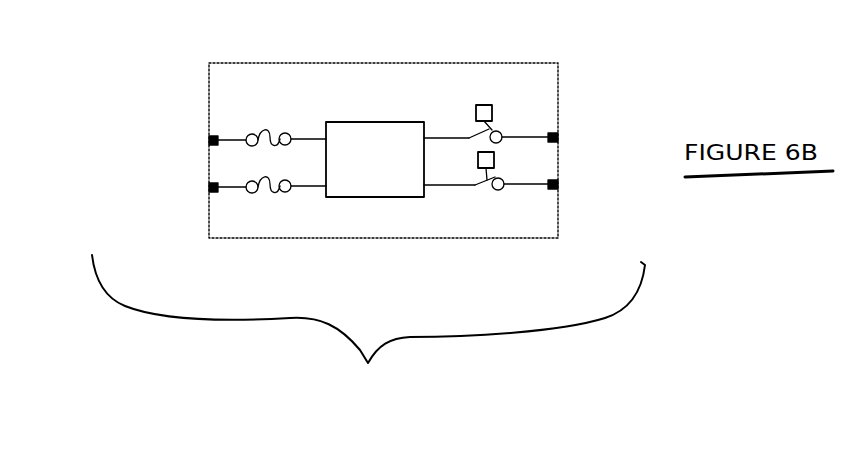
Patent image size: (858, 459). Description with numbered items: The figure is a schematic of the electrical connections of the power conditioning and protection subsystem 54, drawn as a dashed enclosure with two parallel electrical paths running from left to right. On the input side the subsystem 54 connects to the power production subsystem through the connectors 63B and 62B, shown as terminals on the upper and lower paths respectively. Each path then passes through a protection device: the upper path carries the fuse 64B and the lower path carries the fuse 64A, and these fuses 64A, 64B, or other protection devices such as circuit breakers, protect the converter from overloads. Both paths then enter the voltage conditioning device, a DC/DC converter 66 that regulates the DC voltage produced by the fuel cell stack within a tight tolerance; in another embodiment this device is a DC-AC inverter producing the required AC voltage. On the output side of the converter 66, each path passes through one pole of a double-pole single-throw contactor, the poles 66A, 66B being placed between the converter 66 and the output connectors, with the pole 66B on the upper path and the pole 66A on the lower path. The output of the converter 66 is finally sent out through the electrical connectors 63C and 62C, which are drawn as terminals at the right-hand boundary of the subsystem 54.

The power conditioning and protection subsystem 54 is at (368, 327).
The connector 62B is at (204, 187).
The connector 63B is at (204, 141).
The electrical connector 62C is at (558, 185).
The electrical connector 63C is at (564, 138).
The fuse 64A is at (262, 197).
The fuse 64B is at (268, 131).
The DC/DC converter 66 is at (383, 121).
The contactor pole 66A is at (493, 190).
The contactor pole 66B is at (497, 108).